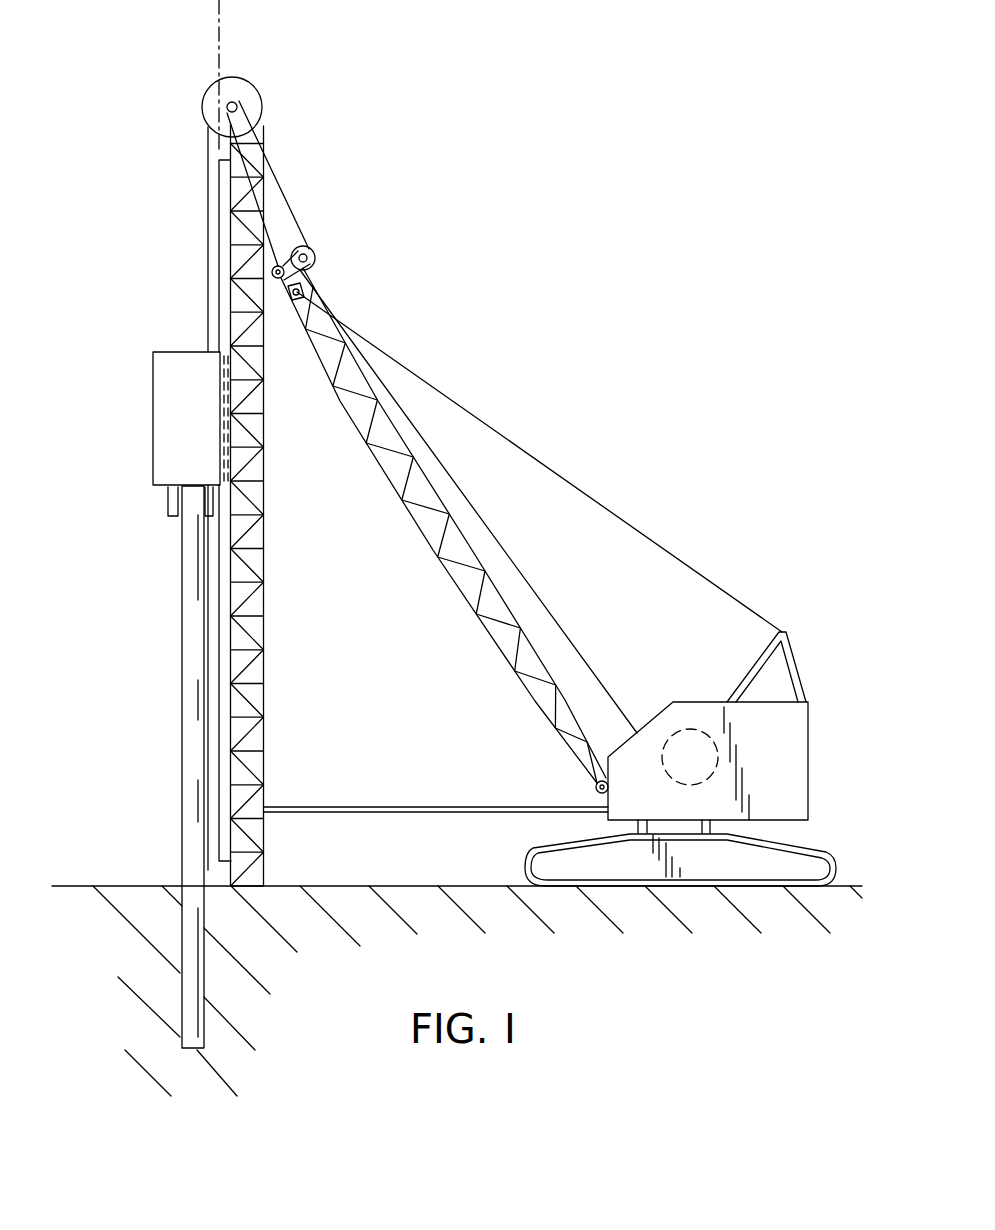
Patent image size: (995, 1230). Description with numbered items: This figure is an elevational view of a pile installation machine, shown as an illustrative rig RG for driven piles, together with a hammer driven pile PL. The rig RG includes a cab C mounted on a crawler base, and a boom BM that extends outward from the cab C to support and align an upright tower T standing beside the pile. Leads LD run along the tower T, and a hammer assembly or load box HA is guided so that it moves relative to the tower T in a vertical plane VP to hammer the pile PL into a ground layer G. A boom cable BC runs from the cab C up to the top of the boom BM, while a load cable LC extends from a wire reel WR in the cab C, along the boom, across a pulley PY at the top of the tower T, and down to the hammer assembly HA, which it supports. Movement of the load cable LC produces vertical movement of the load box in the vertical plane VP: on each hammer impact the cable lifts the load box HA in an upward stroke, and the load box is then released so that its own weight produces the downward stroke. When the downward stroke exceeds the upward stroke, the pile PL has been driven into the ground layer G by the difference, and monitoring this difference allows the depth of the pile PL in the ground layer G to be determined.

The vertical plane VP is at (217, 25).
The pulley PY is at (256, 96).
The leads LD is at (219, 192).
The load cable LC is at (208, 256).
The rig RG is at (570, 277).
The hammer assembly HA is at (160, 447).
The boom cable BC is at (566, 481).
The tower T is at (272, 563).
The boom BM is at (443, 565).
The wire reel WR is at (678, 733).
The cab C is at (804, 739).
The pile PL is at (186, 745).
The ground layer G is at (147, 898).